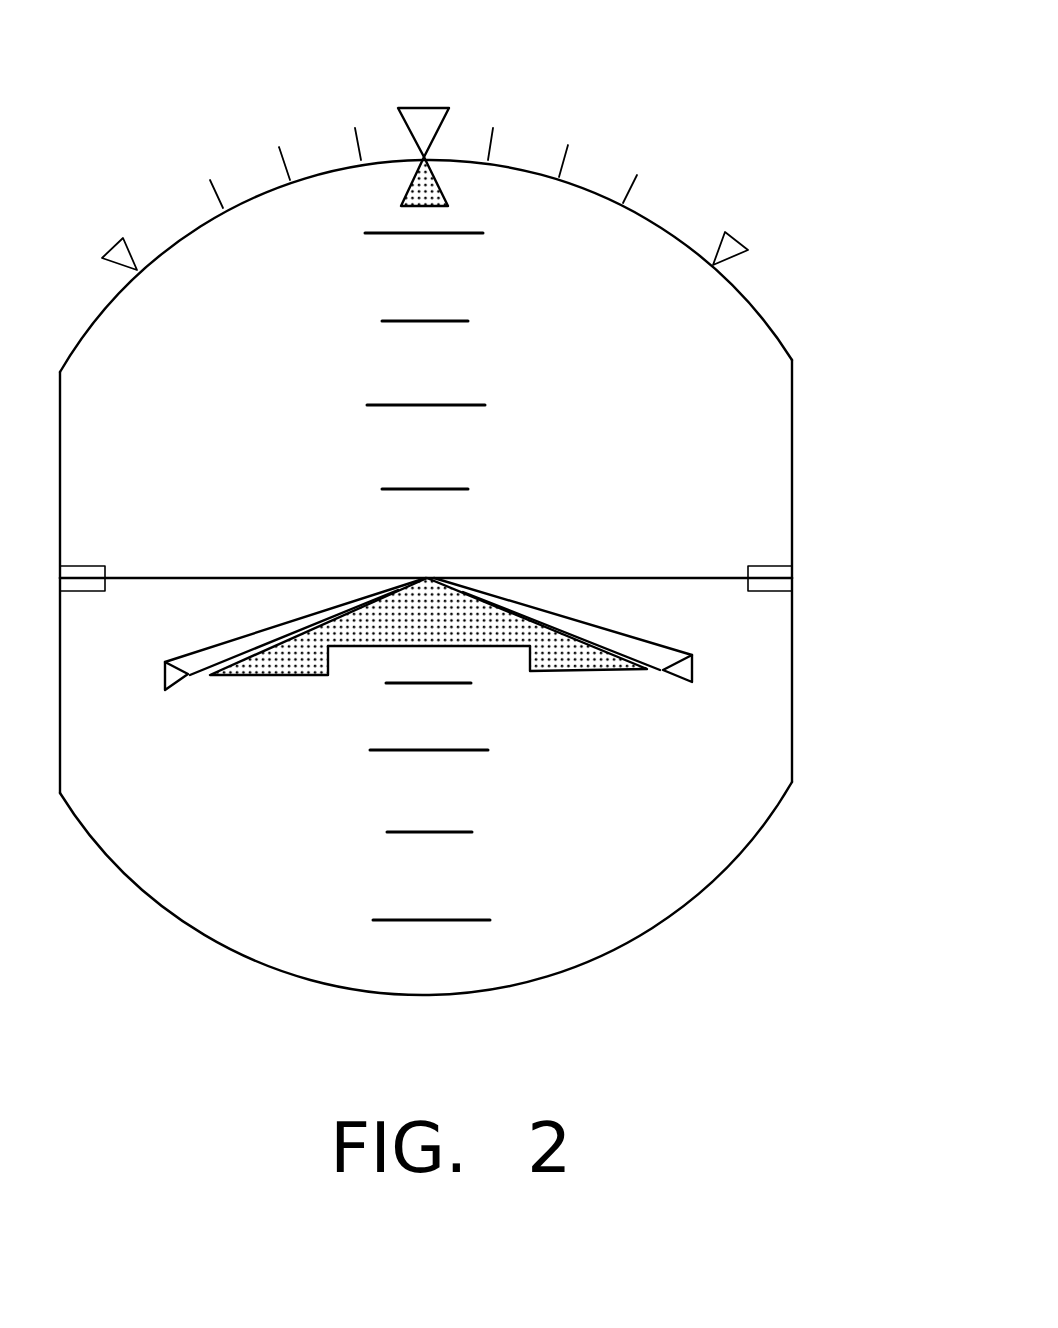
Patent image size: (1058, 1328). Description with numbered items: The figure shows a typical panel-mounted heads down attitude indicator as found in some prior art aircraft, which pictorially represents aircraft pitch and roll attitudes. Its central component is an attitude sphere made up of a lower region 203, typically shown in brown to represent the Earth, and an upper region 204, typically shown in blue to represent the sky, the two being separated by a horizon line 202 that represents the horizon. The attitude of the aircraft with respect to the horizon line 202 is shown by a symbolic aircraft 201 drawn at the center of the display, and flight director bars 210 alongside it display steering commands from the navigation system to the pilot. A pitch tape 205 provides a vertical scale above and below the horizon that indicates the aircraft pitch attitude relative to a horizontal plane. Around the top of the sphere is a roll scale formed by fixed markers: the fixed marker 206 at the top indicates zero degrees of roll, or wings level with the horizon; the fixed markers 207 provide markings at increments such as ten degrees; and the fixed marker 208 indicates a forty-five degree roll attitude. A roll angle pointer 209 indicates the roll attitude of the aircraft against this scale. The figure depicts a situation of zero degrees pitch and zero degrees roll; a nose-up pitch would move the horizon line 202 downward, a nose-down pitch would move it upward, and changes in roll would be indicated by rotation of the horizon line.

The symbolic aircraft 201 is at (613, 673).
The horizon line 202 is at (240, 578).
The region representing the ground 203 is at (740, 802).
The region representing the sky 204 is at (752, 422).
The pitch tape 205 is at (390, 920).
The fixed marker 206 is at (428, 107).
The fixed markers 207 is at (493, 142).
The fixed marker 208 is at (738, 247).
The roll angle pointer 209 is at (407, 189).
The flight director bars 210 is at (733, 650).